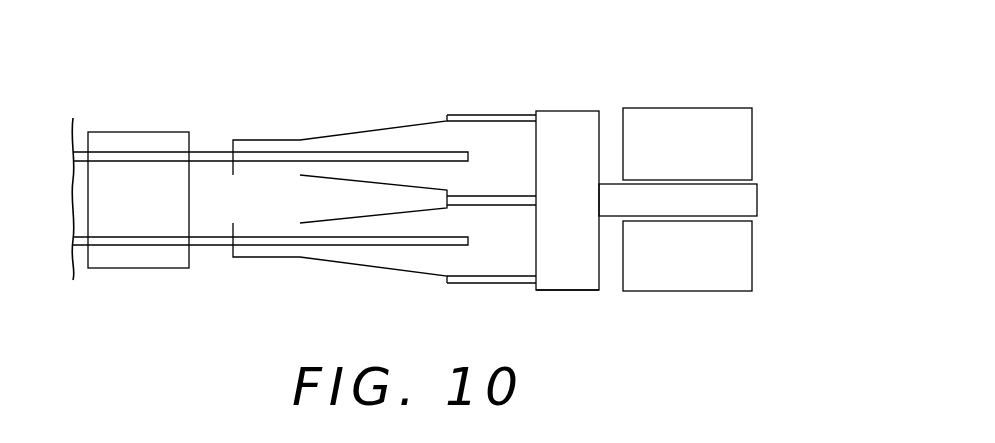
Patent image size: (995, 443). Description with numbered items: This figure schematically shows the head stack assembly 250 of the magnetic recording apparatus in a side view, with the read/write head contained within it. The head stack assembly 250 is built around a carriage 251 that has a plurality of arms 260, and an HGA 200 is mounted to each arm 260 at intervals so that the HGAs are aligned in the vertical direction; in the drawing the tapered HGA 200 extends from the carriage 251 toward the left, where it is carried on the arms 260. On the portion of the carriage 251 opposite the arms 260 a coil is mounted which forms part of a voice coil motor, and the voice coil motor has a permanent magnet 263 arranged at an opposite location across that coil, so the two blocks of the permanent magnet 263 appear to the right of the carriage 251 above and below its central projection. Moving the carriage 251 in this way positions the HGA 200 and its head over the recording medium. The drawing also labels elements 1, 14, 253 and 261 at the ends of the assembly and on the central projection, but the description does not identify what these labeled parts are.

The optical element 1 is at (233, 140).
The rod 14 is at (203, 152).
The HGA 200 is at (325, 145).
The head stack assembly 250 is at (574, 88).
The carriage 251 is at (568, 277).
The shaft 253 is at (745, 198).
The arm 260 is at (452, 116).
The support member 261 is at (128, 145).
The permanent magnet 263 is at (687, 122).